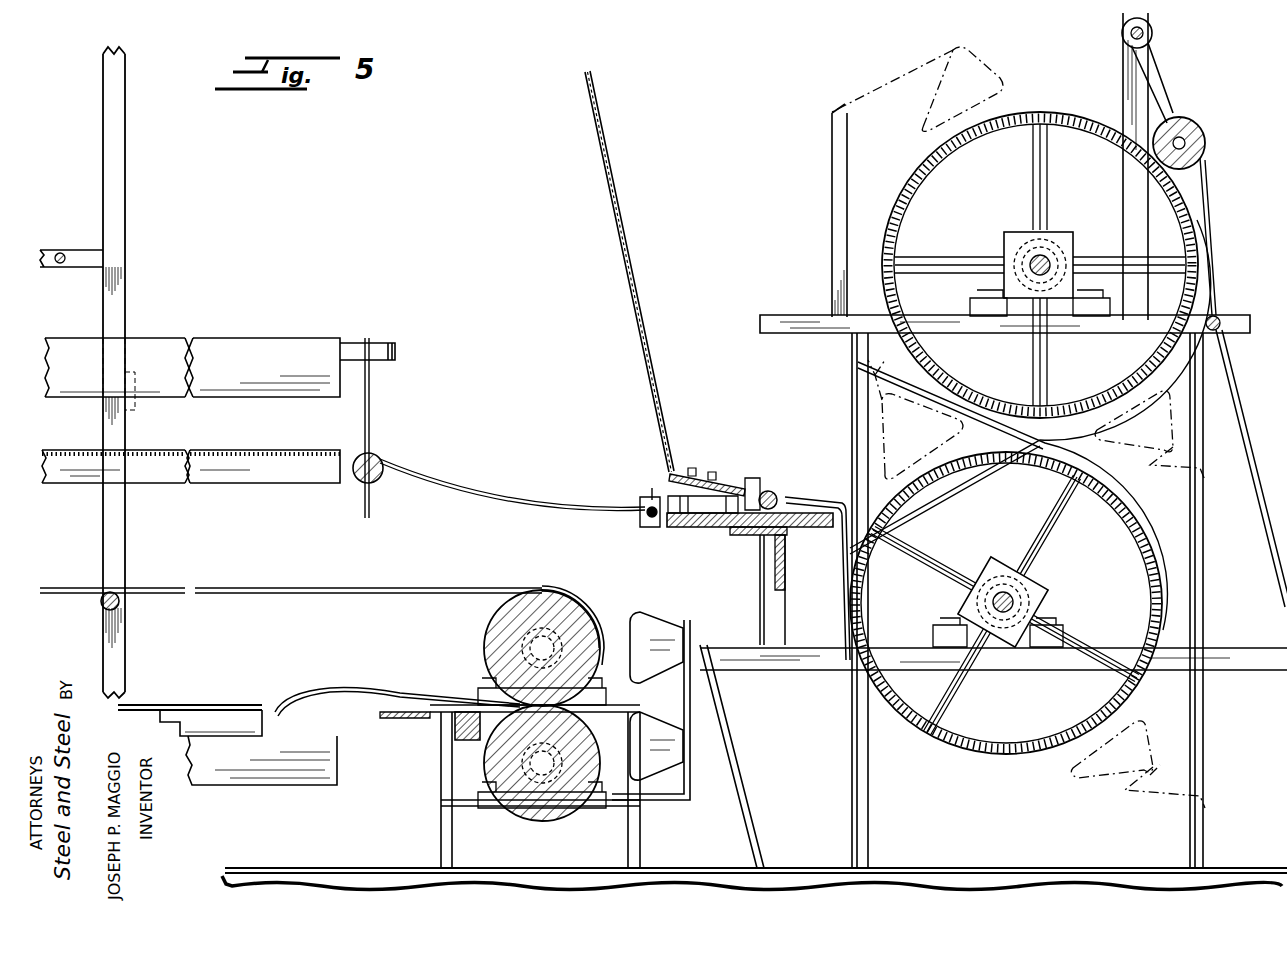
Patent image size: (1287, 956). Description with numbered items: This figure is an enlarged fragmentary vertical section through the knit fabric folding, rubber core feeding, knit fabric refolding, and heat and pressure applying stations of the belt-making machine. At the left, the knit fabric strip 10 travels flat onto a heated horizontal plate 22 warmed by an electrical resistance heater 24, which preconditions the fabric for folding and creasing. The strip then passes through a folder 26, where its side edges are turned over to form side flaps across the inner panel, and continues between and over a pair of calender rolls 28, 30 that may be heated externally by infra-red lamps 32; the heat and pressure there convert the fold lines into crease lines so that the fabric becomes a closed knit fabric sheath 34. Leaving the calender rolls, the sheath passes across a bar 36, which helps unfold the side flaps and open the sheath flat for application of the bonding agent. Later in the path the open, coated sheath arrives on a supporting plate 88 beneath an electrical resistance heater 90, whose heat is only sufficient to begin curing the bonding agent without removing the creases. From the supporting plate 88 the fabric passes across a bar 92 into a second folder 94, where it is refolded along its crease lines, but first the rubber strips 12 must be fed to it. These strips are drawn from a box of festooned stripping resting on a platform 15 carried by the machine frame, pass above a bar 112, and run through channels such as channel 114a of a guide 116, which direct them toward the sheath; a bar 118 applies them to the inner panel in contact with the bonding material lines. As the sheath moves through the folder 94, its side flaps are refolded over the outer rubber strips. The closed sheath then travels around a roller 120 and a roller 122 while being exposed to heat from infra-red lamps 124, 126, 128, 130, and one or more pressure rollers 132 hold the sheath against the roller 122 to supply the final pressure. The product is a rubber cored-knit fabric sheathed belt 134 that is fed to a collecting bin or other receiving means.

The knit fabric strip 10 is at (140, 705).
The rubber strips 12 is at (628, 242).
The platform 15 is at (76, 253).
The heated horizontal plate 22 is at (238, 712).
The electrical resistance heater 24 is at (288, 786).
The folder 26 is at (380, 688).
The calender roll 28 is at (546, 818).
The calender roll 30 is at (486, 648).
The infra-red lamps 32 is at (687, 758).
The closed knit fabric sheath 34 is at (593, 619).
The bar 36 is at (100, 605).
The supporting plate 88 is at (305, 483).
The electrical resistance heater 90 is at (286, 322).
The bar 92 is at (386, 480).
The folder 94 is at (820, 500).
The bar 112 is at (642, 528).
The channel 114a is at (745, 480).
The guide 116 is at (711, 462).
The bar 118 is at (778, 492).
The roller 120 is at (1142, 570).
The roller 122 is at (1074, 114).
The infra-red lamp 124 is at (1108, 790).
The infra-red lamp 126 is at (886, 444).
The infra-red lamp 128 is at (1002, 76).
The infra-red lamp 130 is at (1130, 466).
The pressure roller 132 is at (1200, 128).
The rubber cored-knit fabric sheathed belt 134 is at (1248, 432).